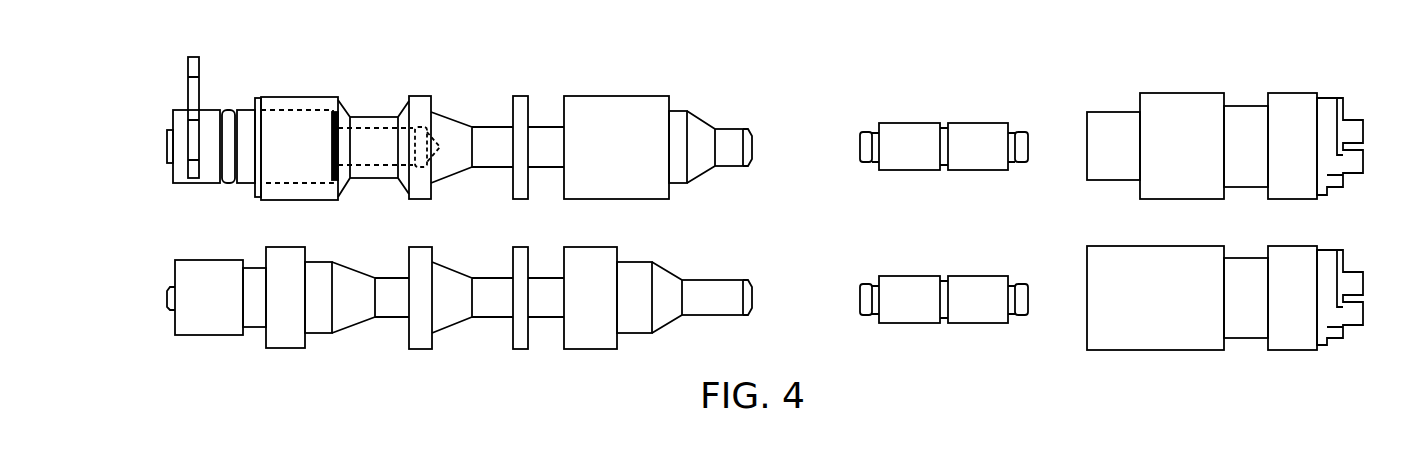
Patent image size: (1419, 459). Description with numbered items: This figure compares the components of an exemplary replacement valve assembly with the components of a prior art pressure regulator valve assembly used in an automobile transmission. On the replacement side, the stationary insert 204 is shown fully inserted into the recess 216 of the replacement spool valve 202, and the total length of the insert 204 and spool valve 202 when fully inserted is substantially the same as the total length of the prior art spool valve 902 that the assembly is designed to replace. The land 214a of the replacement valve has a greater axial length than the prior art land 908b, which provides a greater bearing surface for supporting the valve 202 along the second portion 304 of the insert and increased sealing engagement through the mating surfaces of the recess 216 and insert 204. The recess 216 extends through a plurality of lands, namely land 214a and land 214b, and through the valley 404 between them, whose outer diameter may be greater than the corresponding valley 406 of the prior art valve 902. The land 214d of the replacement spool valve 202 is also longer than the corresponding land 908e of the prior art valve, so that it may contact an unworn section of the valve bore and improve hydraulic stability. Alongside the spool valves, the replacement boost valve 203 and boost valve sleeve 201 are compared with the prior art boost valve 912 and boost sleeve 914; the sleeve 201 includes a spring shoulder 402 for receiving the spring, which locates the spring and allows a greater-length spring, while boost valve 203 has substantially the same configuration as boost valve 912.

The boost valve sleeve 201 is at (1188, 78).
The replacement spool valve 202 is at (470, 78).
The replacement boost valve 203 is at (900, 123).
The stationary insert 204 is at (154, 139).
The land 214a is at (295, 95).
The land 214b is at (420, 95).
The land 214d is at (610, 95).
The recess 216 is at (372, 160).
The second portion 304 is at (245, 185).
The spring shoulder 402 is at (1110, 112).
The valley 404 is at (377, 117).
The valley 406 is at (390, 318).
The spool valve 902 is at (154, 329).
The land 908b is at (287, 352).
The land 908e is at (598, 352).
The boost valve 912 is at (902, 323).
The boost sleeve 914 is at (1233, 374).